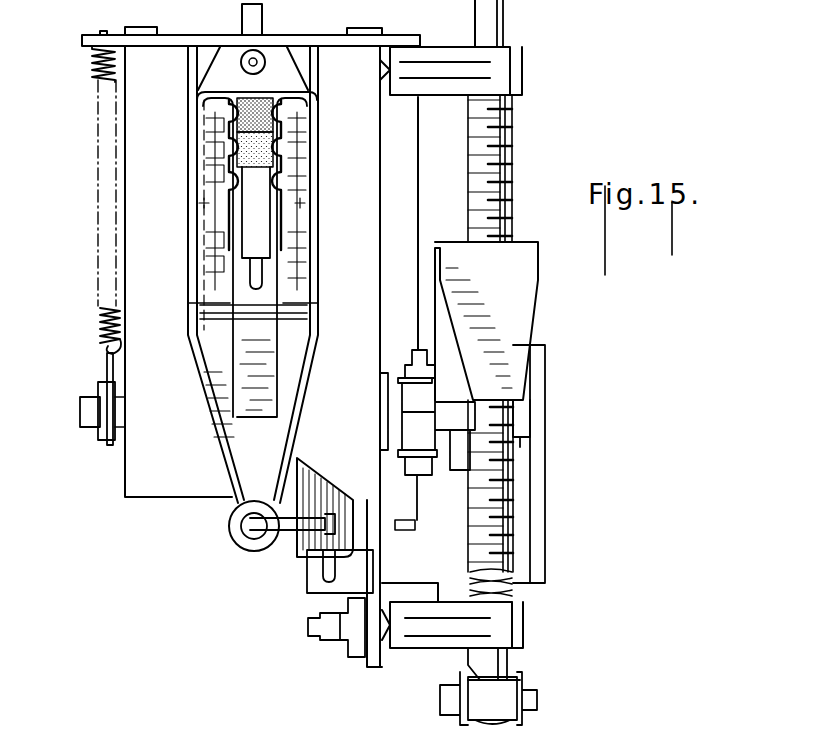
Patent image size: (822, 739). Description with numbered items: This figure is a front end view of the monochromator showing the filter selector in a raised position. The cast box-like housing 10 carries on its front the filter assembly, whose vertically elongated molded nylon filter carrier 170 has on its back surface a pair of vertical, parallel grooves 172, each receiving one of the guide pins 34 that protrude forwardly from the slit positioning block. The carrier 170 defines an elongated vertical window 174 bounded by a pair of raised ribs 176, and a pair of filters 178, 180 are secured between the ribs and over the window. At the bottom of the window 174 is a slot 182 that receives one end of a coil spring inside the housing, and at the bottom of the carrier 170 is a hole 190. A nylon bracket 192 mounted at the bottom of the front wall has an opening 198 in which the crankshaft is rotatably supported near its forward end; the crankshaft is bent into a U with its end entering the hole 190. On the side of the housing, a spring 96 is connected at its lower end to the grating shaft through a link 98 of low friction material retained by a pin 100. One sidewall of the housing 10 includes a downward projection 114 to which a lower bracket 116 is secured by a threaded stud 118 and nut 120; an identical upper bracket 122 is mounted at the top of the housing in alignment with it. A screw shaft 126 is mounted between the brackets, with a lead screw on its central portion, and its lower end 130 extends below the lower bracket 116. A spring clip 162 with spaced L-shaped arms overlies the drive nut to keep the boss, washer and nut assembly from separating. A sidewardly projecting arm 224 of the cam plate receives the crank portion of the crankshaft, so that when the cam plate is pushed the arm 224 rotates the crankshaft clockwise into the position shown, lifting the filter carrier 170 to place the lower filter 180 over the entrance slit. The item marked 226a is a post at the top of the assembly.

The housing 10 is at (128, 490).
The guide pins 34 is at (204, 203).
The spring 96 is at (98, 331).
The link 98 is at (110, 449).
The pin 100 is at (96, 389).
The downward projection 114 is at (368, 586).
The lower bracket 116 is at (527, 619).
The threaded stud 118 is at (315, 641).
The nut 120 is at (345, 649).
The upper bracket 122 is at (512, 70).
The screw shaft 126 is at (505, 11).
The lower end of screw shaft 130 is at (510, 661).
The spring clip 162 is at (530, 285).
The filter carrier 170 is at (213, 459).
The grooves 172 is at (215, 266).
The window 174 is at (247, 222).
The raised ribs 176 is at (275, 305).
The filter 178 is at (237, 116).
The lower filter 180 is at (237, 141).
The slot 182 is at (262, 290).
The hole 190 is at (245, 541).
The bracket 192 is at (318, 496).
The opening 198 is at (313, 531).
The arm 224 is at (400, 521).
The post 226a is at (251, 23).